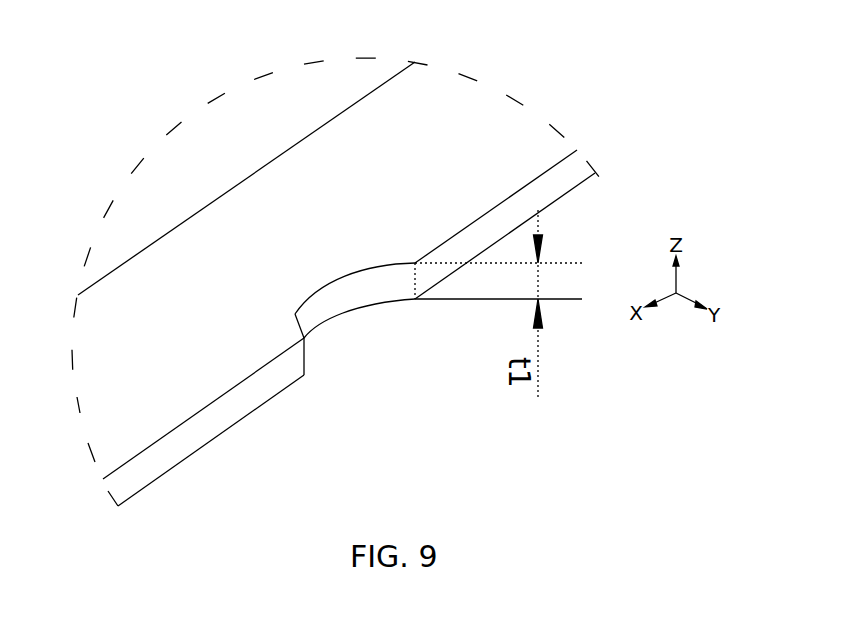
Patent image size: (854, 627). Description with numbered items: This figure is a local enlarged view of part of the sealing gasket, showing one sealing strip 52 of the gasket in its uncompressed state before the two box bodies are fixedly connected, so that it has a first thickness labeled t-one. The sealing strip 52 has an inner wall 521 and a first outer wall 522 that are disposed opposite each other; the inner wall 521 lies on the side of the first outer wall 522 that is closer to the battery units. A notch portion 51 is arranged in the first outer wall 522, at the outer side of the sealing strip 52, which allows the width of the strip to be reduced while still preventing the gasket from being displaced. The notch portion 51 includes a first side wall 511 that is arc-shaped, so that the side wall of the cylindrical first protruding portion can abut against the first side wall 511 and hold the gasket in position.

The notch portion 51 is at (412, 403).
The first side wall 511 is at (350, 298).
The sealing strip 52 is at (506, 112).
The inner wall 521 is at (230, 189).
The first outer wall 522 is at (160, 465).